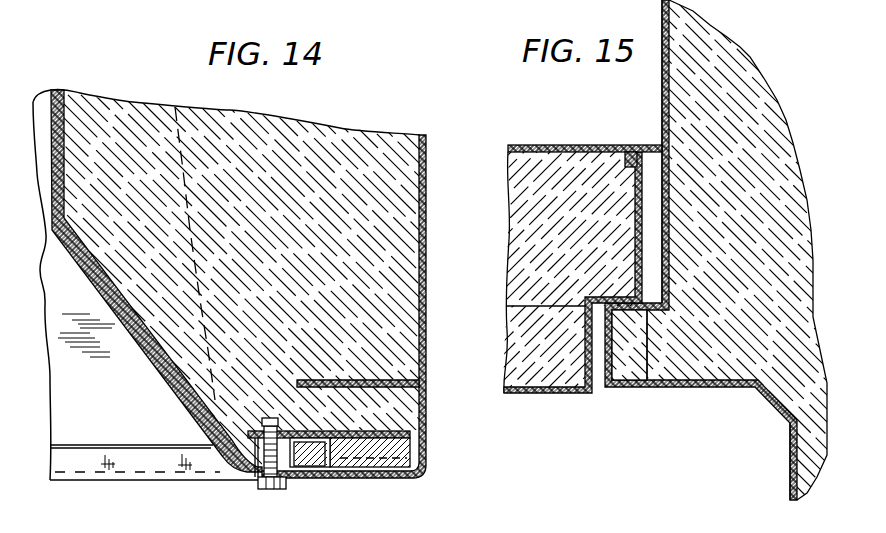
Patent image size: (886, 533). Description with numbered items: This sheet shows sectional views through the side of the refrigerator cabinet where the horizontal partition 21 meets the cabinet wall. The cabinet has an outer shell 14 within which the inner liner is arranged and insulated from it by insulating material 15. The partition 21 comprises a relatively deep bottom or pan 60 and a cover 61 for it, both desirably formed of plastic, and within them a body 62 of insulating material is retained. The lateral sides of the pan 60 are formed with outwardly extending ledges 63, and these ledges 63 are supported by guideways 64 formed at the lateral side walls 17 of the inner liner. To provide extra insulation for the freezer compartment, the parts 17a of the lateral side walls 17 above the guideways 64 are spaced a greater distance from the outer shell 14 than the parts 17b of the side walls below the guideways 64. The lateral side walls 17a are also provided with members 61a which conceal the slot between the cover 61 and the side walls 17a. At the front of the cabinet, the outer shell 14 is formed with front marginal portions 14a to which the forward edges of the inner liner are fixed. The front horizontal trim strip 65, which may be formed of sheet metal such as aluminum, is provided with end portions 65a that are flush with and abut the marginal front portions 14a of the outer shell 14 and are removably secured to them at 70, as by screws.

In FIG. 14, the outer shell 14 is at (430, 455).
In FIG. 14, the front marginal portions 14a is at (360, 479).
In FIG. 14, the insulating material 15 is at (343, 137).
In FIG. 15, the insulating material 15 is at (738, 50).
In FIG. 15, the lateral side walls 17 is at (628, 398).
In FIG. 14, the parts of the lateral side walls above the guideways 17a is at (46, 114).
In FIG. 15, the parts of the lateral side walls above the guideways 17a is at (663, 112).
In FIG. 14, the parts of the lateral side walls below the guideways 17b is at (250, 117).
In FIG. 15, the parts of the lateral side walls below the guideways 17b is at (789, 485).
In FIG. 14, the horizontal partition 21 is at (44, 377).
In FIG. 15, the horizontal partition 21 is at (513, 139).
In FIG. 15, the pan 60 is at (542, 397).
In FIG. 14, the cover 61 is at (63, 422).
In FIG. 15, the cover 61 is at (567, 146).
In FIG. 15, the members 61a is at (651, 143).
In FIG. 15, the body of insulating material 62 is at (522, 257).
In FIG. 15, the ledges 63 is at (520, 307).
In FIG. 15, the guideways 64 is at (648, 388).
In FIG. 14, the trim strip 65 is at (160, 478).
In FIG. 14, the end portions 65a is at (247, 484).
In FIG. 14, the screws 70 is at (290, 487).